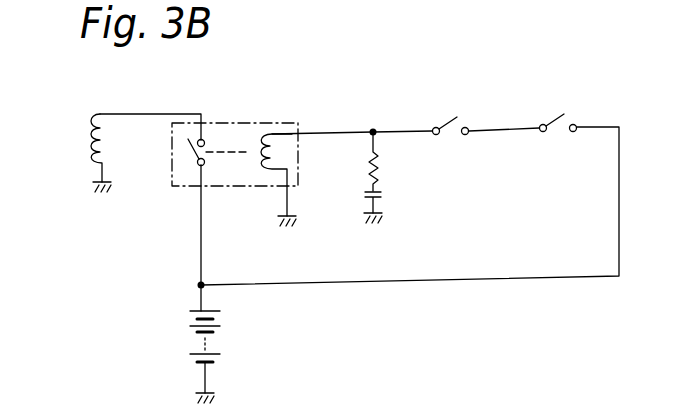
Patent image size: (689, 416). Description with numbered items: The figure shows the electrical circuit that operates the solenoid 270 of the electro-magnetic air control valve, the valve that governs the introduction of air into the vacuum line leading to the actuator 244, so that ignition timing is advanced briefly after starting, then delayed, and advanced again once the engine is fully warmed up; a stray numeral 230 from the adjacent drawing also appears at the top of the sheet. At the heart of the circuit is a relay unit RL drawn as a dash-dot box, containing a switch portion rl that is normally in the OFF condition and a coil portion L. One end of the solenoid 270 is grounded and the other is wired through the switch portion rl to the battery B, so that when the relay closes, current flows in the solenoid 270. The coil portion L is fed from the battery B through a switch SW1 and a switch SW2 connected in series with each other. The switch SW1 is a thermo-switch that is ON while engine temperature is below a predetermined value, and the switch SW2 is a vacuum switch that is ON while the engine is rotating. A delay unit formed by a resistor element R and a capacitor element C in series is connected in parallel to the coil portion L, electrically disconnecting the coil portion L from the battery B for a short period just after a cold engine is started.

The solenoid 270 is at (92, 137).
The relay unit RL is at (249, 120).
The switch portion rl is at (177, 152).
The coil portion L is at (272, 133).
The resistor element R is at (378, 163).
The capacitor element C is at (383, 195).
The temperature sensitive switch SW1 is at (448, 116).
The engine start detecting switch SW2 is at (556, 113).
The battery B is at (188, 328).
The actuator 244 is at (637, 0).
The fragment numeral from adjacent figure 230 is at (605, 2).